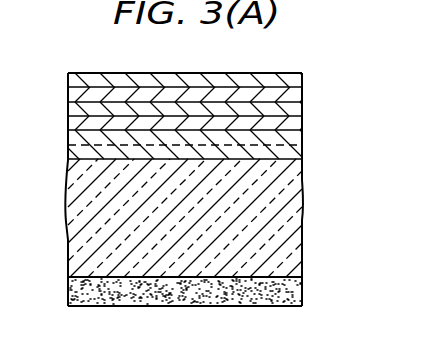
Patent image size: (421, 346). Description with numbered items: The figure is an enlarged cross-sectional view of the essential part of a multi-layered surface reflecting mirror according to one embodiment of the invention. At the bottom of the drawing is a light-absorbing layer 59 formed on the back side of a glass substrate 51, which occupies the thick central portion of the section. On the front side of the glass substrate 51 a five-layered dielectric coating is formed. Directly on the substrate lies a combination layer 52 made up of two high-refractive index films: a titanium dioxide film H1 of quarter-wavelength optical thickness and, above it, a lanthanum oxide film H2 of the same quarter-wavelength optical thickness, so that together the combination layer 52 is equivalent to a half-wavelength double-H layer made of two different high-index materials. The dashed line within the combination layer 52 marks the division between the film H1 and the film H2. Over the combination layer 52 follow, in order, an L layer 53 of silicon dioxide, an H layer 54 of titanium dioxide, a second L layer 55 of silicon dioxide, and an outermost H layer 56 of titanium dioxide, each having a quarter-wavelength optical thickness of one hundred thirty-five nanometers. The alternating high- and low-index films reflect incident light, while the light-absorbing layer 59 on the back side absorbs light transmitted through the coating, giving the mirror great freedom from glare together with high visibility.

The glass substrate 51 is at (293, 230).
The H1+H2 combination layer 52 is at (295, 150).
The L layer 53 is at (297, 130).
The H layer 54 is at (297, 108).
The L layer 55 is at (295, 93).
The H layer 56 is at (297, 78).
The light-absorbing layer 59 is at (292, 290).
The high-refractive index film H1 is at (72, 150).
The high-refractive index film H2 is at (72, 135).